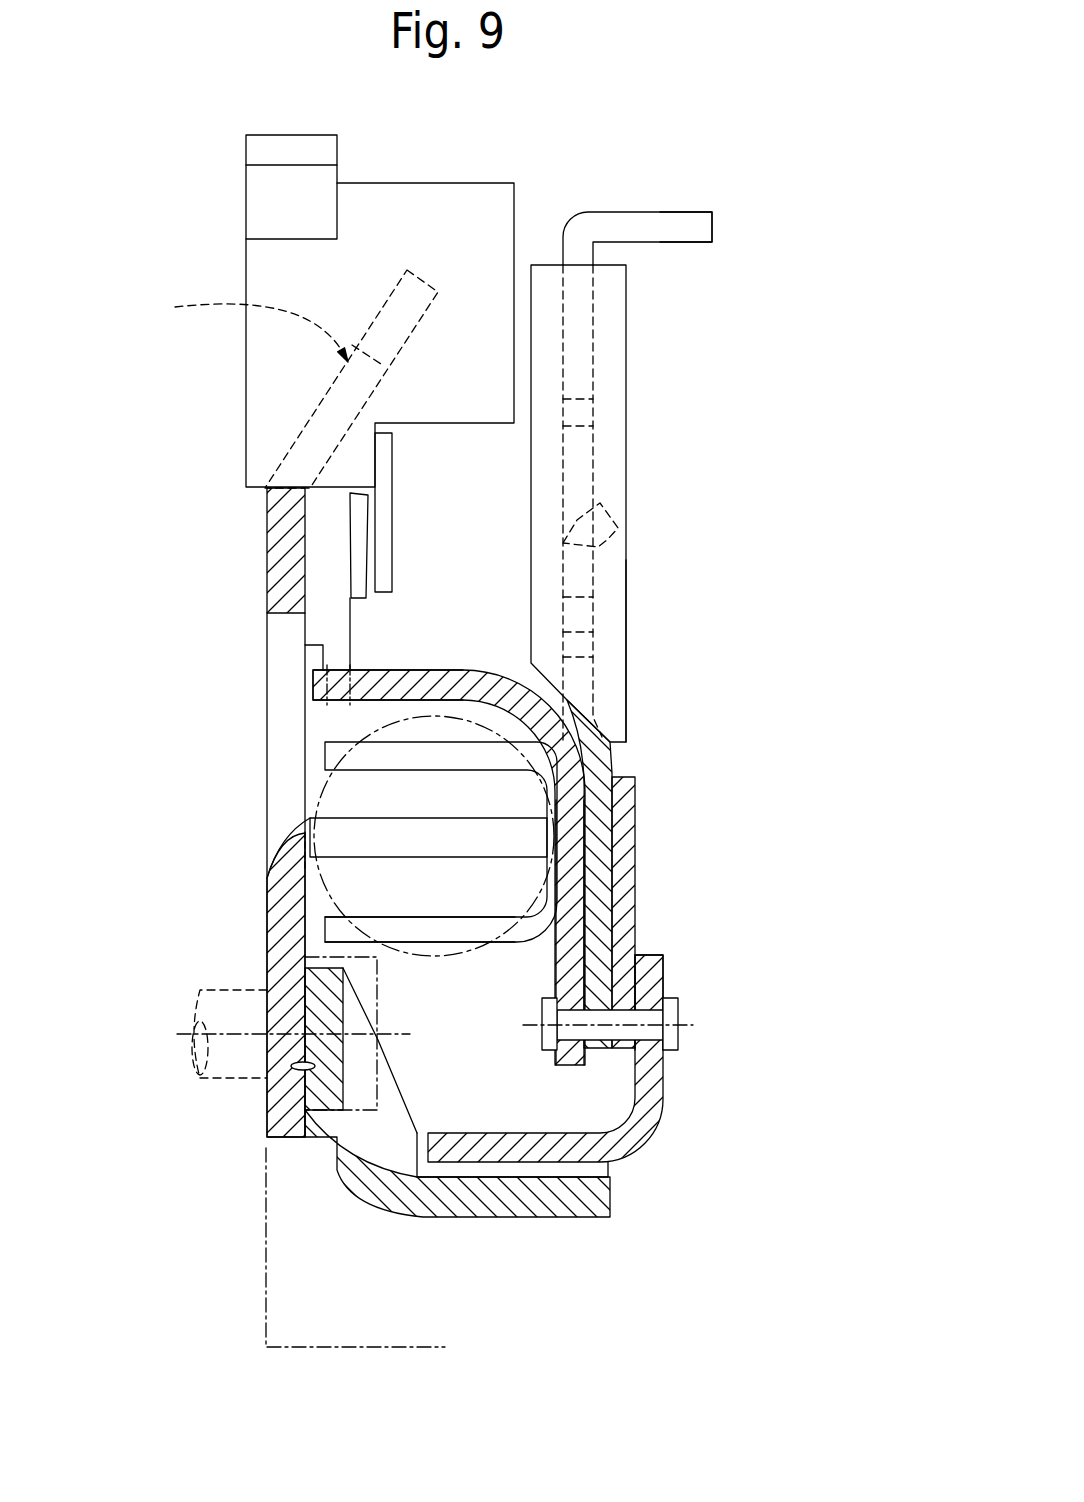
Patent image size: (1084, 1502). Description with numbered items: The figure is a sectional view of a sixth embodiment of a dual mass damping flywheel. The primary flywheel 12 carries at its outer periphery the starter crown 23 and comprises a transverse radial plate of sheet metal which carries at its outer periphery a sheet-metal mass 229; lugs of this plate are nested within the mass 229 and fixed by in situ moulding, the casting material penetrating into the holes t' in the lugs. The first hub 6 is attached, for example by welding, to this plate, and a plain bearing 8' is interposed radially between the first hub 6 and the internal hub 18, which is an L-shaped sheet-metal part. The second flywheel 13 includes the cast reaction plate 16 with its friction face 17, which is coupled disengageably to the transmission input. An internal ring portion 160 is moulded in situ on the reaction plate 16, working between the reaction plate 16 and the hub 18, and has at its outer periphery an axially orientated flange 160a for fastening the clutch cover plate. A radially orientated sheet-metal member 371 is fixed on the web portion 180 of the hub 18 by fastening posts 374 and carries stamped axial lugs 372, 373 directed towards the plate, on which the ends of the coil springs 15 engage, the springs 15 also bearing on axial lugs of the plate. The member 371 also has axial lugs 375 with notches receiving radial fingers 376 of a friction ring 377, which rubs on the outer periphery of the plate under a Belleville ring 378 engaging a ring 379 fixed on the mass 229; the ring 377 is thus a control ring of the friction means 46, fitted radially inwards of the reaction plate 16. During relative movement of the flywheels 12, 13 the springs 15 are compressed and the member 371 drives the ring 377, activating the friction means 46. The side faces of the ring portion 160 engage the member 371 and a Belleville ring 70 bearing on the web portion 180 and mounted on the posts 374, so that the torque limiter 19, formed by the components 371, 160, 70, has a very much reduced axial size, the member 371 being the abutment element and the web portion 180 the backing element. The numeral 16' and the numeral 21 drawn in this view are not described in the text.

The first hub 6 is at (497, 1218).
The plain bearing 8' is at (558, 1169).
The primary flywheel 12 is at (327, 300).
The secondary flywheel 13 is at (632, 503).
The resilient damping means 15 is at (372, 720).
The reaction plate 16 is at (487, 650).
The pivoted housing wall position 16' is at (289, 379).
The friction face 17 is at (632, 583).
The internal hub 18 is at (600, 1058).
The torque limiter 19 is at (662, 882).
The shaft 21 is at (232, 1082).
The starter crown 23 is at (327, 150).
The friction means 46 is at (430, 551).
The Belleville ring 70 is at (640, 917).
The ring portion 160 is at (602, 758).
The axially orientated annular flange 160a is at (715, 222).
The web portion 180 is at (660, 967).
The mass 229 is at (478, 200).
The radially orientated sheet metal member 371 is at (573, 868).
The axial lug 372 is at (340, 935).
The axial lug 373 is at (330, 760).
The fastening posts 374 is at (676, 1012).
The axial lugs 375 is at (333, 688).
The radial fingers 376 is at (332, 657).
The friction ring 377 is at (327, 528).
The Belleville ring 378 is at (363, 535).
The ring 379 is at (383, 486).
The tolerance position t is at (638, 502).
The holes t' is at (251, 328).